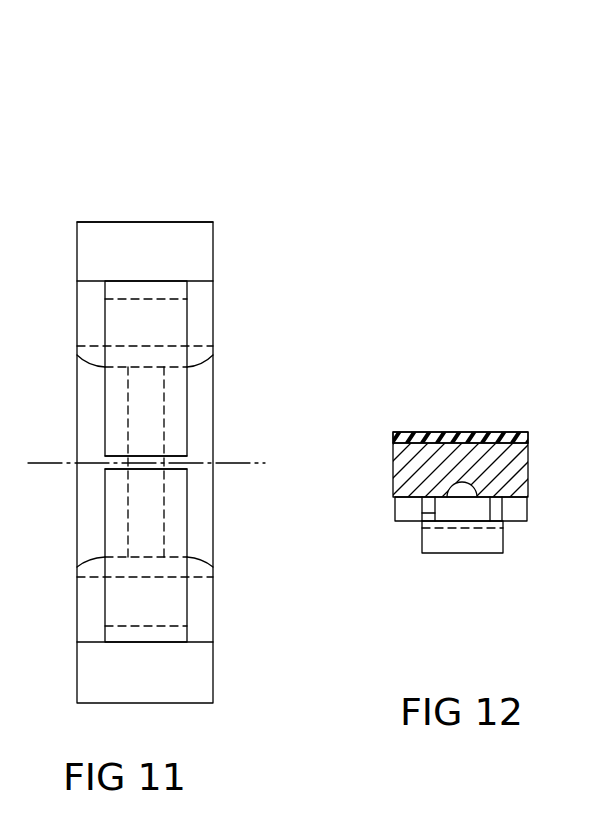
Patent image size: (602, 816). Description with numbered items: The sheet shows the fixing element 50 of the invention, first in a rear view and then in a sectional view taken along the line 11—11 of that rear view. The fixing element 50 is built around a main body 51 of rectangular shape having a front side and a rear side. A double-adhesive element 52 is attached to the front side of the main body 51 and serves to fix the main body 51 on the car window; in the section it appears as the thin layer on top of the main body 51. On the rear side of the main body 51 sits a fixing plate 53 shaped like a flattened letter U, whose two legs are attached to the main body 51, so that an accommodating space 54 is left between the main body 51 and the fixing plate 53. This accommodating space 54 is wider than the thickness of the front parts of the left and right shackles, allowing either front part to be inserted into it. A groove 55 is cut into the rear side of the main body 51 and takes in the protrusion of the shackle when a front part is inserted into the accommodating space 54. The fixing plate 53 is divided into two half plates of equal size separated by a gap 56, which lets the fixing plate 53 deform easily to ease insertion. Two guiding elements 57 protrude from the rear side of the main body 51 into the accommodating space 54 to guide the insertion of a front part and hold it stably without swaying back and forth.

In FIG. 11, the section line 11 is at (40, 456).
In FIG. 11, the lens assembly 50 is at (112, 196).
In FIG. 12, the lens assembly 50 is at (483, 380).
In FIG. 11, the main body 51 is at (172, 238).
In FIG. 12, the main body 51 is at (513, 462).
In FIG. 11, the double-adhesive element 52 is at (4, 182).
In FIG. 12, the double-adhesive element 52 is at (441, 432).
In FIG. 11, the fixing plate 53 is at (168, 320).
In FIG. 12, the fixing plate 53 is at (432, 555).
In FIG. 12, the accommodating space 54 is at (426, 513).
In FIG. 11, the groove 55 is at (147, 463).
In FIG. 12, the groove 55 is at (460, 497).
In FIG. 11, the gap 56 is at (112, 474).
In FIG. 11, the guiding elements 57 is at (203, 357).
In FIG. 12, the guiding elements 57 is at (518, 515).